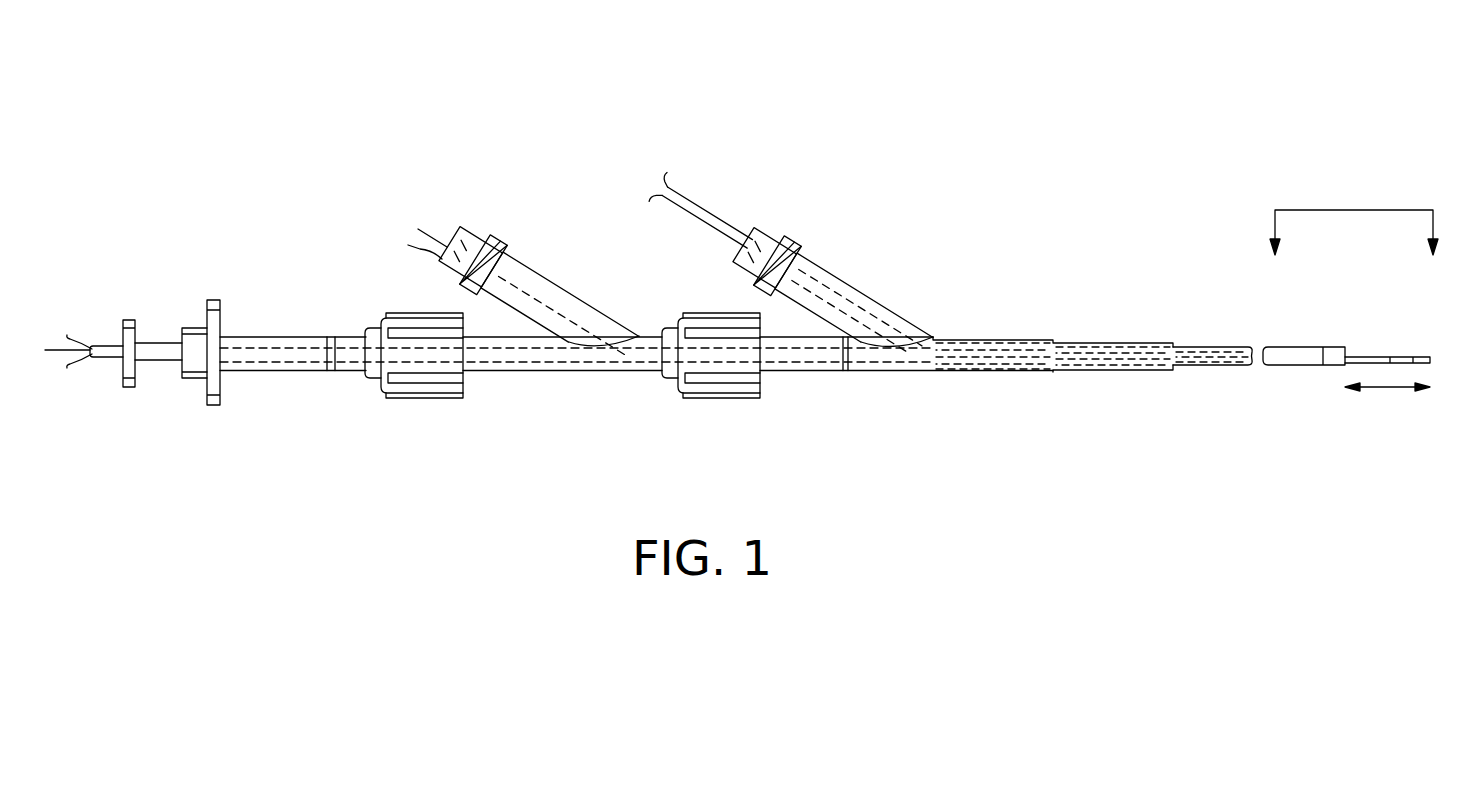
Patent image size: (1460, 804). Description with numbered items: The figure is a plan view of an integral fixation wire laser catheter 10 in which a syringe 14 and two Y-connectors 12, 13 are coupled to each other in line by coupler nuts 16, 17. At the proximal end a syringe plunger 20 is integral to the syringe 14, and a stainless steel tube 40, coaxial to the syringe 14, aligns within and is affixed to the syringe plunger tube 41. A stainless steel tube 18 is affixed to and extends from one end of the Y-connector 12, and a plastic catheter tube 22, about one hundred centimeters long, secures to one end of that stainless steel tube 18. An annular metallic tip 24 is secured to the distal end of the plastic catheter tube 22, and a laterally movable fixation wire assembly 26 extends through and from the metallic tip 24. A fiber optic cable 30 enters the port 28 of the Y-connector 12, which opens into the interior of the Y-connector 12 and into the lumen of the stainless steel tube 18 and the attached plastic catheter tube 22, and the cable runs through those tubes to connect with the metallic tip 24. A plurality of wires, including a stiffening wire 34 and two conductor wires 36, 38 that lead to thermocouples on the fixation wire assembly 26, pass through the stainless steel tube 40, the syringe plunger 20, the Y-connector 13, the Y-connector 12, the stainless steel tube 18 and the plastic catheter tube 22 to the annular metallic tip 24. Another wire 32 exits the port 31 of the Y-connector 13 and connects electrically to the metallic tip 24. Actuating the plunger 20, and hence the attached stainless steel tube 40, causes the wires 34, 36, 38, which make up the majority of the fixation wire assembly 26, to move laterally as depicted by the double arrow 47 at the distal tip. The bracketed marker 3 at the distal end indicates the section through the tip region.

The integral fixation wire laser catheter 10 is at (1096, 106).
The Y-connector 12 is at (821, 270).
The Y-connector 13 is at (538, 275).
The syringe 14 is at (265, 311).
The coupler nut 16 is at (712, 383).
The coupler nut 17 is at (413, 383).
The stainless steel tube 18 is at (1078, 342).
The syringe plunger 20 is at (130, 320).
The plastic catheter tube 22 is at (1203, 353).
The annular metallic tip 24 is at (1335, 352).
The fixation wire assembly 26 is at (1411, 334).
The port 28 is at (737, 259).
The fiber optic cable 30 is at (698, 212).
The port 31 is at (408, 245).
The wire 32 is at (435, 238).
The stiffening wire 34 is at (55, 352).
The wire 36 is at (71, 345).
The wire 38 is at (70, 363).
The stainless steel tube 40 is at (119, 345).
The syringe plunger tube 41 is at (147, 365).
The double arrow 47 is at (1390, 387).
The section line 3- 3 is at (1356, 252).